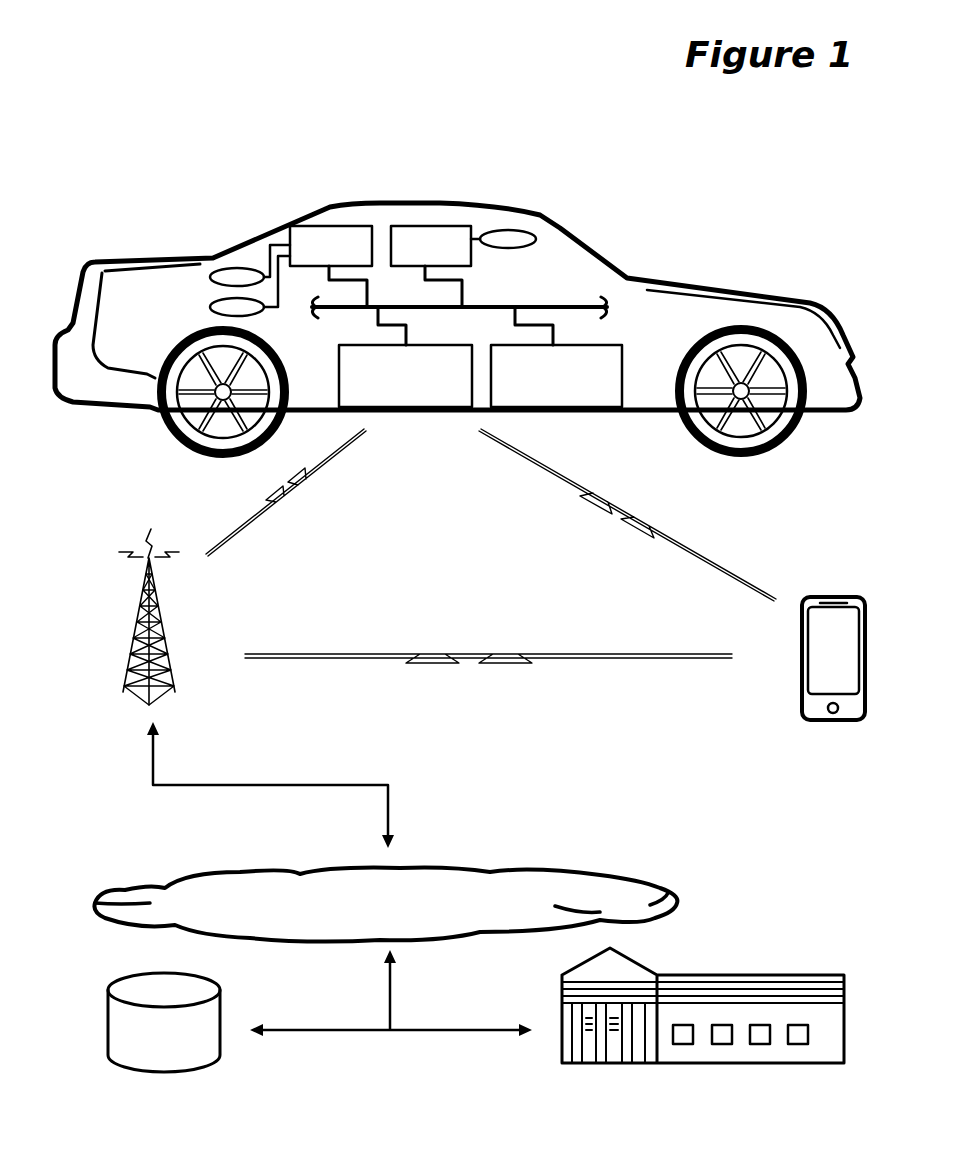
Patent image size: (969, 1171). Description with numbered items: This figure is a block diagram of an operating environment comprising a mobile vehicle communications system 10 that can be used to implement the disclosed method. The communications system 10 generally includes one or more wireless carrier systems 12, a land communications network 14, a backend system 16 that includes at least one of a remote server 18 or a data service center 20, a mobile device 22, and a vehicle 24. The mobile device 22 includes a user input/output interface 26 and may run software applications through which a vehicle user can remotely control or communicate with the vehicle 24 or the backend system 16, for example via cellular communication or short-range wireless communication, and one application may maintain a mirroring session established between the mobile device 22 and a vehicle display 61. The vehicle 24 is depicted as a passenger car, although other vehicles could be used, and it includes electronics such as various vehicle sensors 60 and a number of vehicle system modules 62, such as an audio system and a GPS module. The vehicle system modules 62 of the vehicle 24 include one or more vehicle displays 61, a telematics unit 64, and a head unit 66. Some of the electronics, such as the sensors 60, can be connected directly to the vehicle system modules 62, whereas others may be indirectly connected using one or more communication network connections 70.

The mobile vehicle communications system 10 is at (334, 68).
The wireless carrier system 12 is at (138, 633).
The land communications network 14 is at (385, 905).
The backend system 16 is at (536, 1049).
The remote server 18 is at (147, 990).
The data service center 20 is at (560, 1000).
The mobile device 22 is at (855, 583).
The vehicle 24 is at (636, 268).
The user input/output interface 26 is at (820, 700).
The vehicle sensors 60 is at (210, 303).
The vehicle display 61 is at (431, 246).
The vehicle system modules 62 is at (418, 226).
The telematics unit 64 is at (405, 376).
The head unit 66 is at (556, 376).
The communication network connections 70 is at (501, 296).